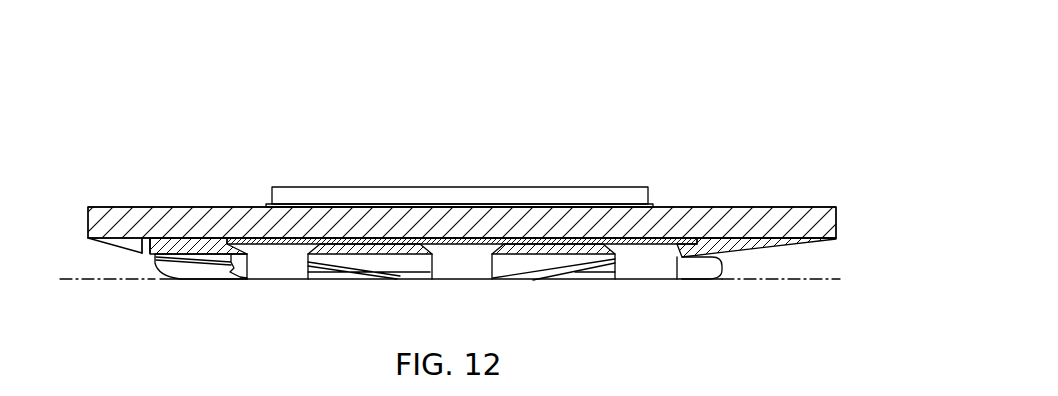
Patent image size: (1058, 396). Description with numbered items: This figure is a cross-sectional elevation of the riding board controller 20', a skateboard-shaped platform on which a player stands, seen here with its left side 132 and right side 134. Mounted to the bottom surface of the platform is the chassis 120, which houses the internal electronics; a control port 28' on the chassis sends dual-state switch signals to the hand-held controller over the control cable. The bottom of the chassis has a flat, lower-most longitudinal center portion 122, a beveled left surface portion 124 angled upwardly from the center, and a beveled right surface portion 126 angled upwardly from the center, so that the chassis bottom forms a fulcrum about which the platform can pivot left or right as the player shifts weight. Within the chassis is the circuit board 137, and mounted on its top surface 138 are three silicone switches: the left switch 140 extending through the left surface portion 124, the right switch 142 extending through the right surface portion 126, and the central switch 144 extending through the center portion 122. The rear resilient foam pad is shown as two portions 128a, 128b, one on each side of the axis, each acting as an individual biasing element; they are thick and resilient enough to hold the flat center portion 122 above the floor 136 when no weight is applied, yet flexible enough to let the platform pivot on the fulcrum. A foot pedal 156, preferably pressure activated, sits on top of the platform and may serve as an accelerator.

The riding board controller 20' is at (462, 126).
The control port 28' is at (136, 279).
The left side 132 is at (462, 219).
The right side 134 is at (423, 145).
The foot pedal 156 is at (318, 194).
The circuit board 137 is at (558, 241).
The floor 136 is at (68, 282).
The chassis 120 is at (740, 248).
The longitudinal center portion 122 is at (503, 278).
The left surface portion 124 is at (583, 275).
The right surface portion 126 is at (237, 270).
The rear resilient foam pad portion 128a is at (695, 273).
The rear resilient foam pad portion 128b is at (183, 280).
The top surface of the circuit board 138 is at (352, 254).
The left switch 140 is at (640, 273).
The right switch 142 is at (287, 277).
The central switch 144 is at (457, 275).